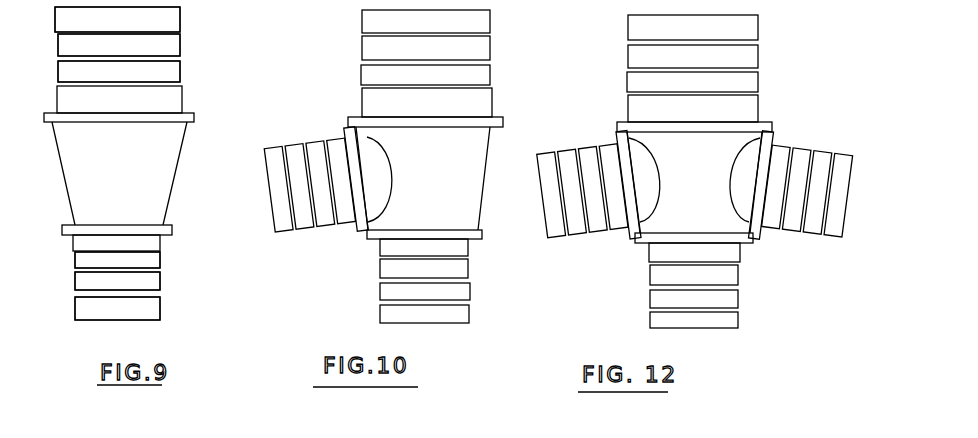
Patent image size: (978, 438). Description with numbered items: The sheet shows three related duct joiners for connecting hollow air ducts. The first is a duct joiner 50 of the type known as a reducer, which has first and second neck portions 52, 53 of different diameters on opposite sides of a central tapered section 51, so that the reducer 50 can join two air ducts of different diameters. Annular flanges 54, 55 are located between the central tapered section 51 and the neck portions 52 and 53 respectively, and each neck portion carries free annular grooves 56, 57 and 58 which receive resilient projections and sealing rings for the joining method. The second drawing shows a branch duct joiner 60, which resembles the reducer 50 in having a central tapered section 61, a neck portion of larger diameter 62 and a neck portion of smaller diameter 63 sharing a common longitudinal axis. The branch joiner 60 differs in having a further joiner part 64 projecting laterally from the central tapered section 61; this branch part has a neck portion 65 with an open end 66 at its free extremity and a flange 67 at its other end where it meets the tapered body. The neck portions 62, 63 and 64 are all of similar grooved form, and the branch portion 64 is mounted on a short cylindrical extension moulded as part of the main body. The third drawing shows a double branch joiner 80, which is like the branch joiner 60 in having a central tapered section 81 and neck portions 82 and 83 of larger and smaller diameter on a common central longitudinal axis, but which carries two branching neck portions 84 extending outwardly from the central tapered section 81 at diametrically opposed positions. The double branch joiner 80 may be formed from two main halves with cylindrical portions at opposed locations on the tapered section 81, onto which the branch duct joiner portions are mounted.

In FIG. 9, the duct joiner 50 is at (44, 163).
In FIG. 9, the central tapered section 51 is at (176, 181).
In FIG. 9, the first neck portion 52 is at (188, 65).
In FIG. 9, the second neck portion 53 is at (170, 280).
In FIG. 9, the annular flange 54 is at (200, 118).
In FIG. 9, the annular flange 55 is at (178, 232).
In FIG. 9, the annular groove 56 is at (57, 32).
In FIG. 9, the annular groove 57 is at (58, 56).
In FIG. 9, the annular groove 58 is at (55, 85).
In FIG. 10, the branch duct joiner 60 is at (340, 98).
In FIG. 10, the central tapered section 61 is at (468, 192).
In FIG. 10, the neck portion of larger diameter 62 is at (497, 58).
In FIG. 10, the neck portion of smaller diameter 63 is at (478, 290).
In FIG. 10, the further joiner part 64 is at (326, 240).
In FIG. 10, the neck portion 65 is at (309, 156).
In FIG. 10, the open end 66 is at (262, 191).
In FIG. 10, the flange 67 is at (349, 206).
In FIG. 12, the double branch joiner 80 is at (587, 113).
In FIG. 12, the central tapered section 81 is at (738, 140).
In FIG. 12, the neck portion 82 is at (763, 60).
In FIG. 12, the neck portion 83 is at (748, 292).
In FIG. 12, the branching neck portion 84 is at (582, 243).